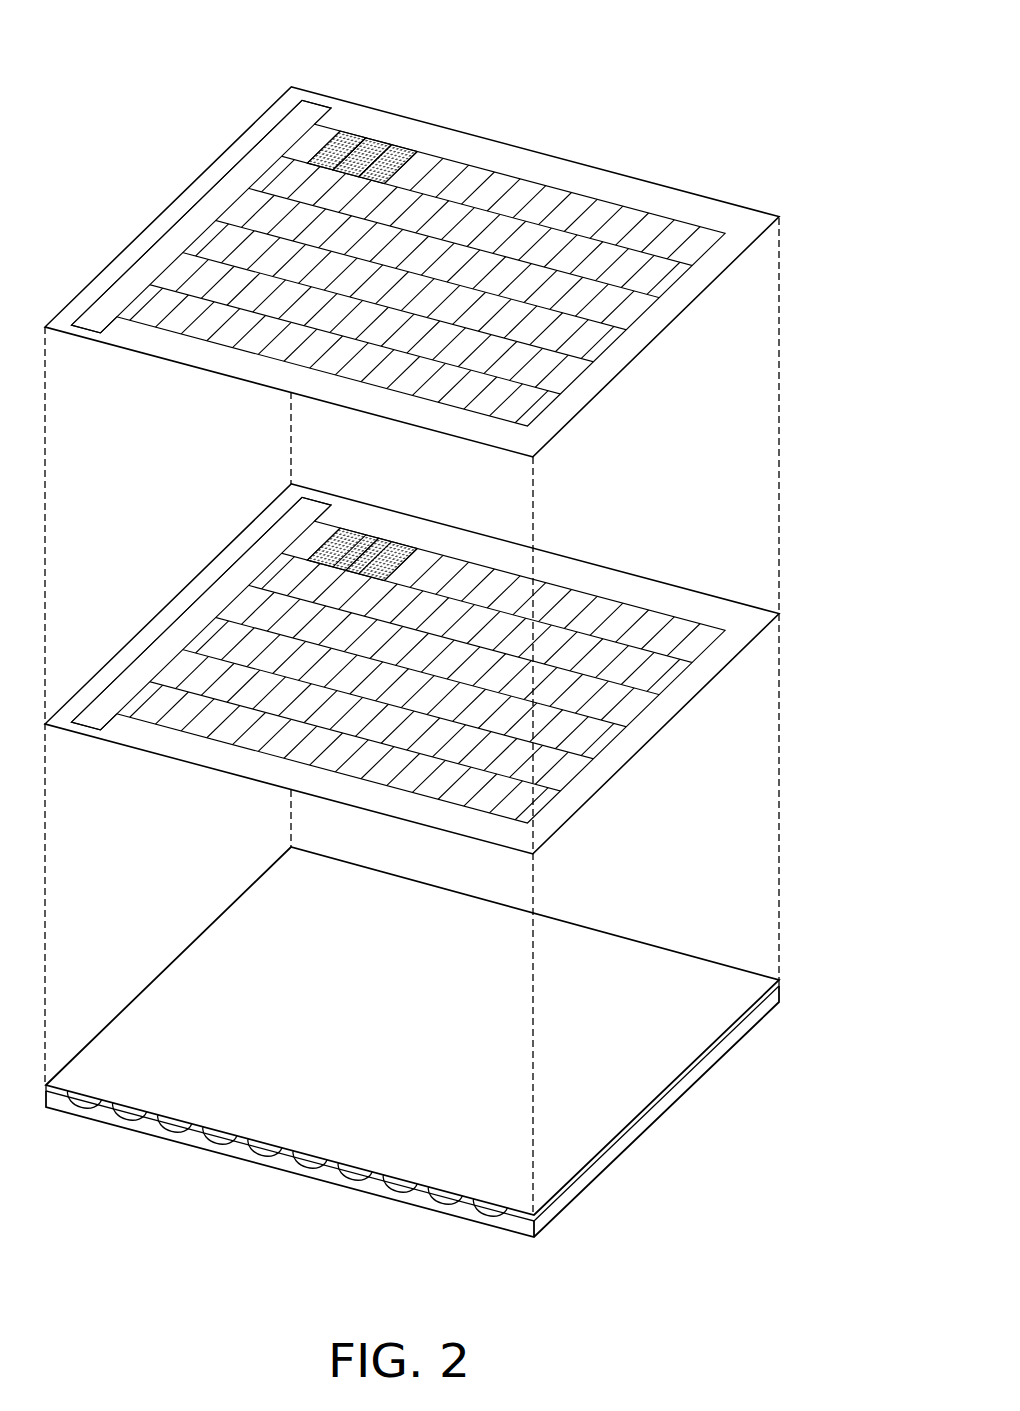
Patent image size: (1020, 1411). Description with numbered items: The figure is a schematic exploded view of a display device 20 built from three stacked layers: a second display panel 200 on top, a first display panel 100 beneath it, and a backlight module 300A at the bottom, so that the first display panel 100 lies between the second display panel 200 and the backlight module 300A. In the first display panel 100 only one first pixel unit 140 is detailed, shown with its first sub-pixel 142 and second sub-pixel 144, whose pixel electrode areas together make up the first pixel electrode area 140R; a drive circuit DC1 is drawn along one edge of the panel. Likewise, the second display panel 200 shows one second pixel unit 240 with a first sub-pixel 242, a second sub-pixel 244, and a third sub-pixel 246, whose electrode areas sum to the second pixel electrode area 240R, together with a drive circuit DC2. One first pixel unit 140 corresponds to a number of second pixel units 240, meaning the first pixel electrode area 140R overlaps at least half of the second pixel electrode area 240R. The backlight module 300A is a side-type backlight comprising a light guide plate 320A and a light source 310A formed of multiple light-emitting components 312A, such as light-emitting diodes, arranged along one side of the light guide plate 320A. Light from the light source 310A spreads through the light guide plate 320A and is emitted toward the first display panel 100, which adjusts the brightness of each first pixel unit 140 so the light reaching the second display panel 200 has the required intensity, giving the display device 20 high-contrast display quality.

The display device 20 is at (834, 1276).
The first display panel 100 is at (412, 649).
The first pixel unit 140 is at (291, 513).
The first pixel electrode area 140R is at (302, 517).
The first sub-pixel 142 is at (327, 550).
The second sub-pixel 144 is at (333, 580).
The drive circuit DC1 is at (187, 623).
The second display panel 200 is at (412, 230).
The second pixel unit 240 is at (356, 94).
The second pixel electrode area 240R is at (350, 110).
The first sub-pixel 242 is at (350, 137).
The second sub-pixel 244 is at (372, 147).
The third sub-pixel 246 is at (437, 125).
The drive circuit DC2 is at (185, 223).
The backlight module 300A is at (412, 1069).
The light source 310A is at (543, 1228).
The light-emitting component 312A is at (315, 1145).
The light guide plate 320A is at (610, 1158).